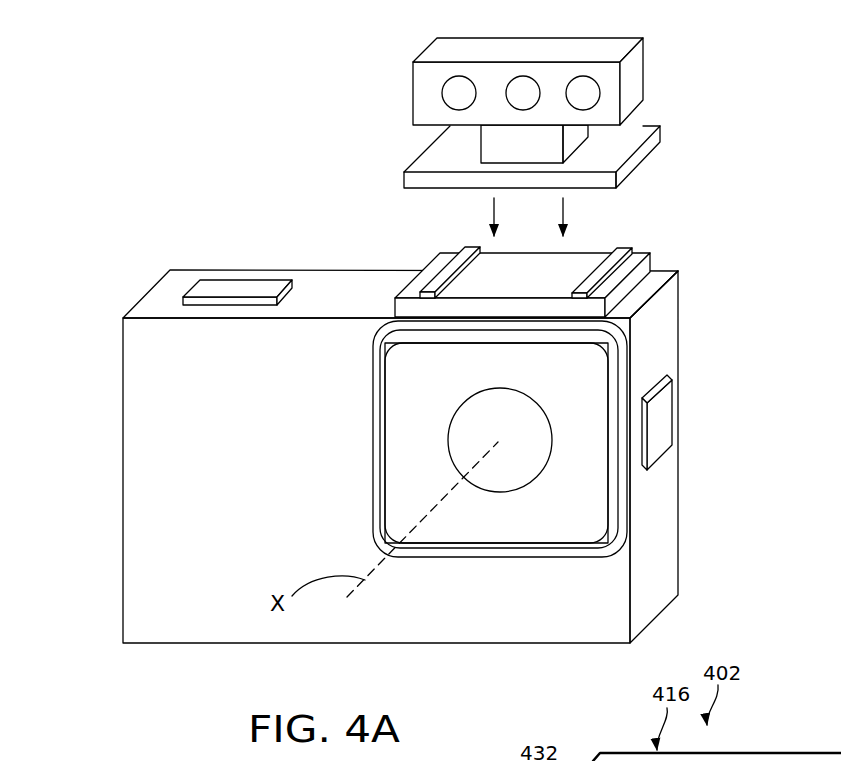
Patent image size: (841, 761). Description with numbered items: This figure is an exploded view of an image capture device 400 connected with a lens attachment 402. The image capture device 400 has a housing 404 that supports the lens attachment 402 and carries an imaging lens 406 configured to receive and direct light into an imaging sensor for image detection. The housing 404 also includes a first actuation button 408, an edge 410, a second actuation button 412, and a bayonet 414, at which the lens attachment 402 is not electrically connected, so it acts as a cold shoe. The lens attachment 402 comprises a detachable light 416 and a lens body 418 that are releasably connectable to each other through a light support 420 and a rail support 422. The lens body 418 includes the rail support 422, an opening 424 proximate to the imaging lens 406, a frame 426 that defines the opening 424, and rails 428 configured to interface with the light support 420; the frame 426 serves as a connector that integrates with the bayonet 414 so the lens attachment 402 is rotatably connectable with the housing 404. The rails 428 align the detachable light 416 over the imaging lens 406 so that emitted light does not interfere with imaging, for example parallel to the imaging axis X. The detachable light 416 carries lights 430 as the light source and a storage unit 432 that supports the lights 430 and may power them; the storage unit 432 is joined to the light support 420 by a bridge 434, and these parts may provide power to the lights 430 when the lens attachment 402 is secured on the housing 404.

The image capture device 400 is at (84, 261).
The lens attachment 402 is at (413, 197).
The housing 404 is at (119, 375).
The imaging lens 406 is at (517, 488).
The first actuation button 408 is at (215, 280).
The edge 410 is at (648, 300).
The second actuation button 412 is at (668, 380).
The bayonet 414 is at (388, 522).
The detachable light 416 is at (544, 74).
The lens body 418 is at (391, 305).
The light support 420 is at (632, 172).
The rail support 422 is at (612, 290).
The opening 424 is at (603, 547).
The frame 426 is at (373, 405).
The rails 428 is at (650, 298).
The lights 430 is at (600, 93).
The storage unit 432 is at (413, 69).
The bridge 434 is at (481, 145).